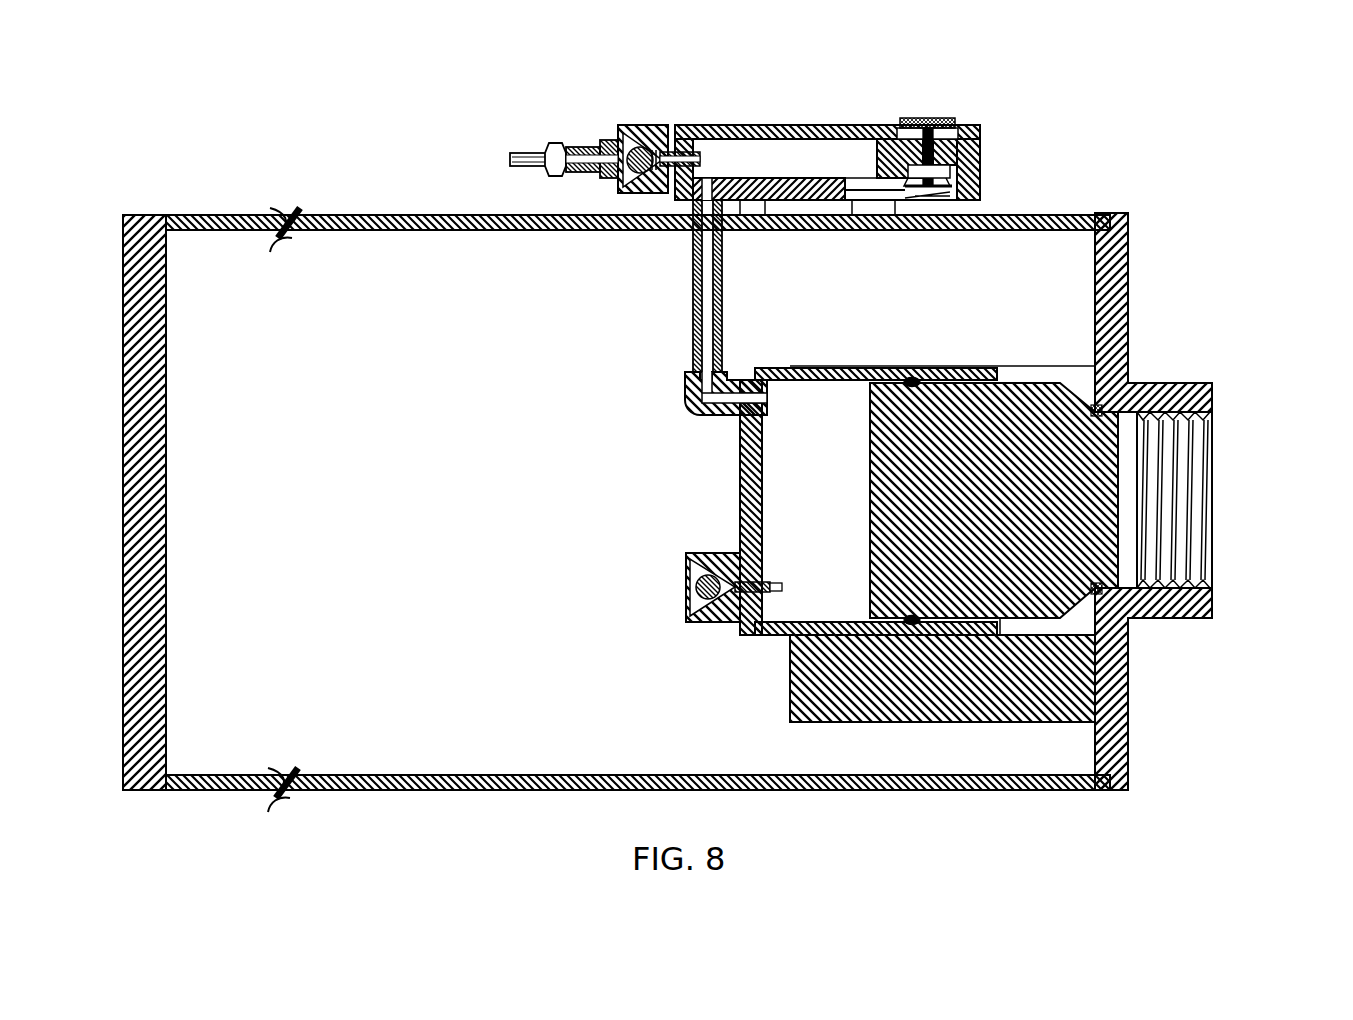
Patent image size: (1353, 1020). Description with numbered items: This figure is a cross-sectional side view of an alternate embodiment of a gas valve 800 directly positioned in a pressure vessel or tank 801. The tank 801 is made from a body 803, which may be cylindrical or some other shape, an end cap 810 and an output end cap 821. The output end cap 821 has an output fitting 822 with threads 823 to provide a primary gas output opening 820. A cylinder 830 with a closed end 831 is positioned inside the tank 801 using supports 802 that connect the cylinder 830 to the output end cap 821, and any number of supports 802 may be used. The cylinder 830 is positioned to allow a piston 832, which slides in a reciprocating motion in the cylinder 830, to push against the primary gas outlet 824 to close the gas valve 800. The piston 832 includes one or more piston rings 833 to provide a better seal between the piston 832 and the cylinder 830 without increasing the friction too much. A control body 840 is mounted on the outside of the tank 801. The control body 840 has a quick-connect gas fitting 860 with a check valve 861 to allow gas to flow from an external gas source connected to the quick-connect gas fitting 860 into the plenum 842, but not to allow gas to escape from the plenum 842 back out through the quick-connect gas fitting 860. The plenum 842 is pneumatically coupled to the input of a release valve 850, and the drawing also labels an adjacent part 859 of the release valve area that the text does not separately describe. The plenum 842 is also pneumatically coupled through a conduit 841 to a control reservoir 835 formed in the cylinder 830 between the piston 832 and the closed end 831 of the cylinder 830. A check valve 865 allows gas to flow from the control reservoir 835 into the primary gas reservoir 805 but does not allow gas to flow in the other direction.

The gas valve 800 is at (1062, 328).
The pressure vessel or tank 801 is at (358, 205).
The supports 802 is at (1055, 365).
The body 803 is at (195, 215).
The primary gas reservoir 805 is at (395, 628).
The end cap 810 is at (120, 735).
The primary gas output opening 820 is at (1218, 553).
The output end cap 821 is at (1128, 750).
The output fitting 822 is at (1162, 620).
The threads 823 is at (1208, 448).
The primary gas outlet 824 is at (1106, 418).
The cylinder 830 is at (815, 368).
The closed end 831 is at (740, 510).
The piston 832 is at (1095, 642).
The piston rings 833 is at (913, 378).
The control reservoir 835 is at (800, 545).
The control body 840 is at (742, 125).
The conduit 841 is at (712, 290).
The plenum 842 is at (810, 150).
The release valve 850 is at (972, 125).
The valve spring 859 is at (985, 165).
The quick-connect gas fitting 860 is at (560, 150).
The check valve 861 is at (640, 125).
The check valve 865 is at (706, 622).